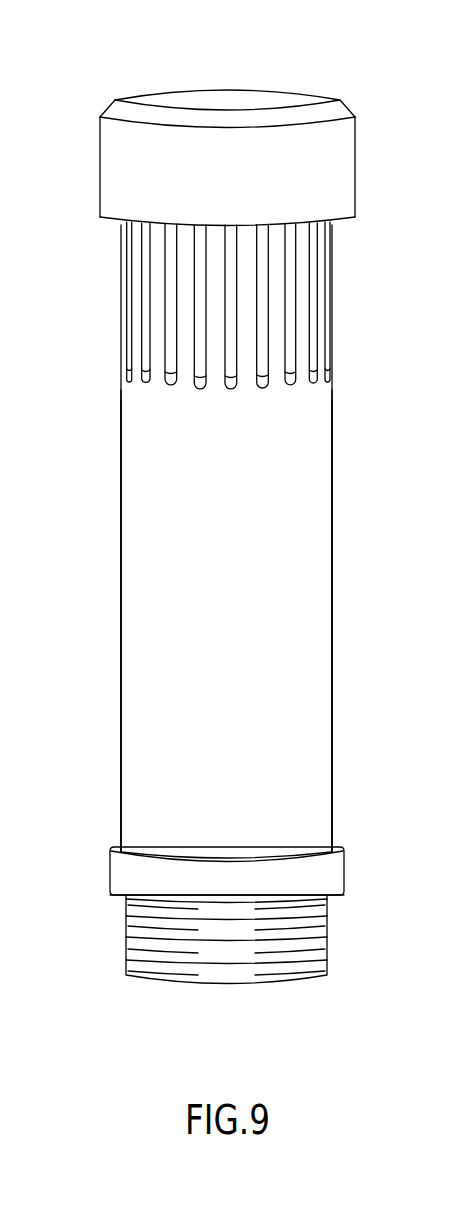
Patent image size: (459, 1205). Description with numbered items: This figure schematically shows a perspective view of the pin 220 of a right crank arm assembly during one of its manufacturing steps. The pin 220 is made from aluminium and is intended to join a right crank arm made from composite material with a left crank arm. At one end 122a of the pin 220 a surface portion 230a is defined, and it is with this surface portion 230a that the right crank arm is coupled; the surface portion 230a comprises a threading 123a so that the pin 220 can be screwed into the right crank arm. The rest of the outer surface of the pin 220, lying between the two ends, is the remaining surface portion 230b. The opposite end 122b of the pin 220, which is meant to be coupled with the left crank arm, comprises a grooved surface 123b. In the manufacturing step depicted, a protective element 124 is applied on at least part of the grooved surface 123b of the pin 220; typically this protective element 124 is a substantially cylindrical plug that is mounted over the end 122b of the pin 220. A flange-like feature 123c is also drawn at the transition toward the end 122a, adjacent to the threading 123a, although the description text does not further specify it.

The protective element 124 is at (230, 152).
The opposite end 122b is at (369, 242).
The grooved surface 123b is at (170, 285).
The remaining surface portion 230b is at (362, 458).
The pin 220 is at (360, 560).
The flange 123c is at (119, 848).
The end 122a is at (362, 822).
The surface portion 230a is at (107, 940).
The threading 123a is at (313, 942).